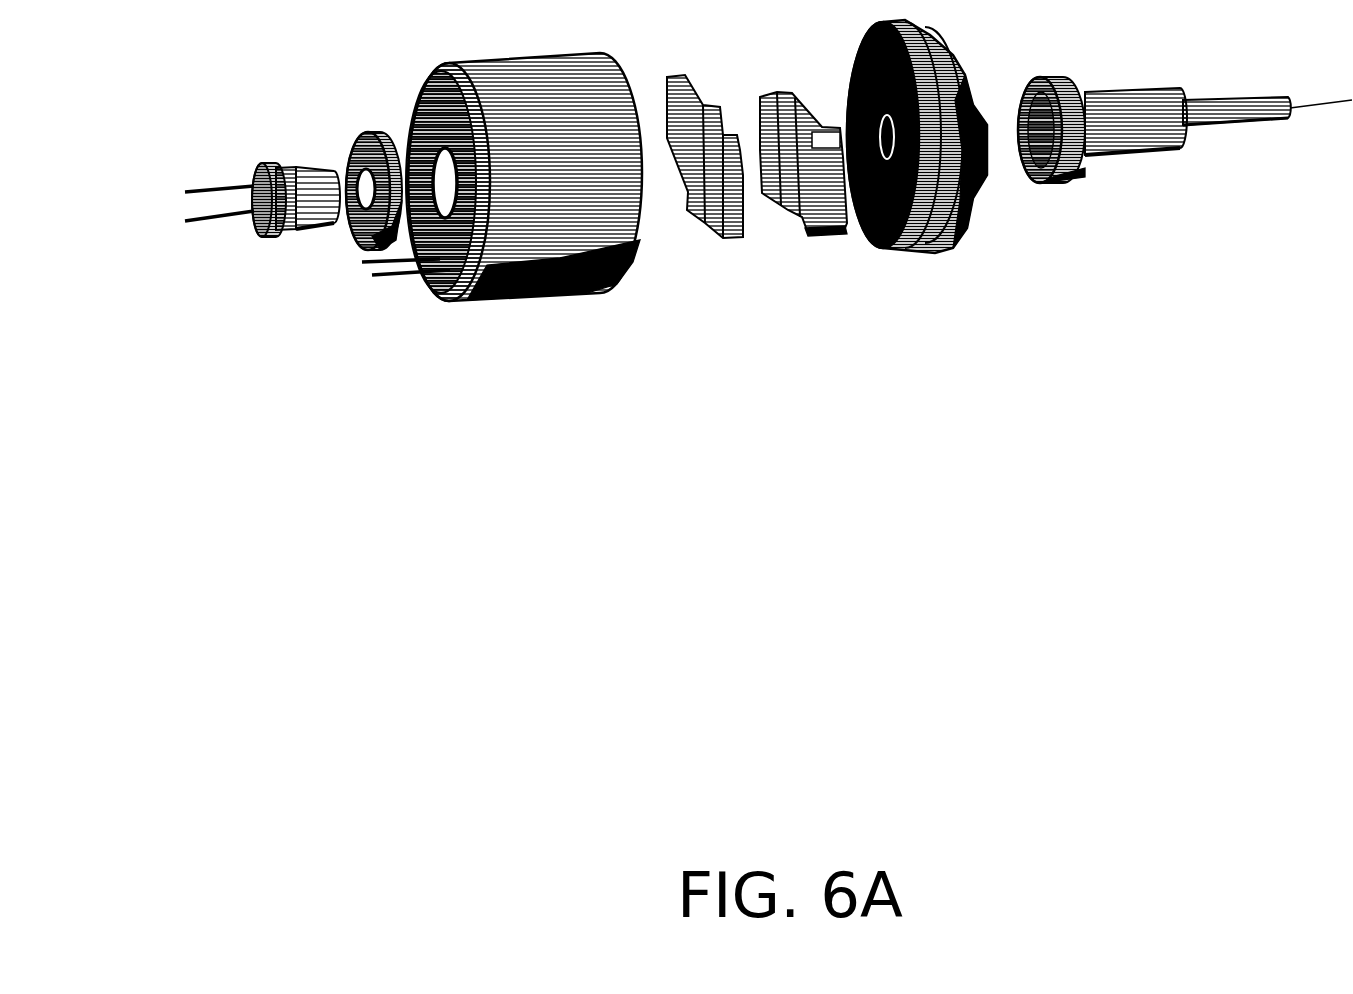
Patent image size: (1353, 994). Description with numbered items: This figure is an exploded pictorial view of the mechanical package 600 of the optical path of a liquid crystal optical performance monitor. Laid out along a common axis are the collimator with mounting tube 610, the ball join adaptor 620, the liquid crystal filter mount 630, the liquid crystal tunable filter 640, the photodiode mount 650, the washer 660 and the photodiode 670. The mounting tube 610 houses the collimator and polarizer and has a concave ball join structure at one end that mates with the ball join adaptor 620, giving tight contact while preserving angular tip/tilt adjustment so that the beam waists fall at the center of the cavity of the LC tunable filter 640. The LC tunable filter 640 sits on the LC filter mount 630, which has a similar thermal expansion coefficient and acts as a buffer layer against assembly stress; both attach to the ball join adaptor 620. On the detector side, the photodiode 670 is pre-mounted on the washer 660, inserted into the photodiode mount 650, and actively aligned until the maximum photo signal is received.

The mechanical package 600 is at (188, 841).
The collimator with mounting tube 610 is at (1185, 280).
The ball join adaptor 620 is at (924, 266).
The liquid crystal filter mount 630 is at (806, 294).
The liquid crystal tunable filter 640 is at (714, 290).
The photodiode mount 650 is at (502, 265).
The washer 660 is at (387, 285).
The photodiode 670 is at (262, 319).